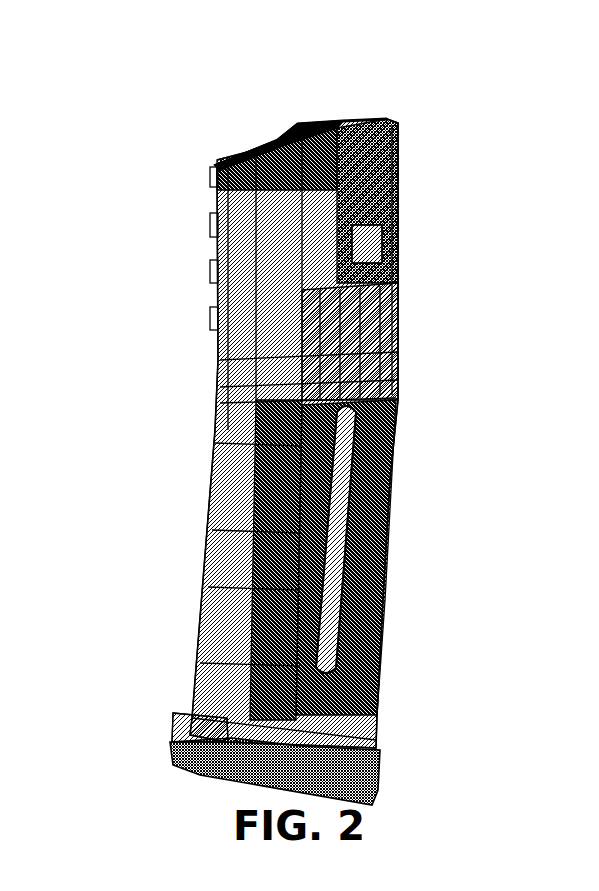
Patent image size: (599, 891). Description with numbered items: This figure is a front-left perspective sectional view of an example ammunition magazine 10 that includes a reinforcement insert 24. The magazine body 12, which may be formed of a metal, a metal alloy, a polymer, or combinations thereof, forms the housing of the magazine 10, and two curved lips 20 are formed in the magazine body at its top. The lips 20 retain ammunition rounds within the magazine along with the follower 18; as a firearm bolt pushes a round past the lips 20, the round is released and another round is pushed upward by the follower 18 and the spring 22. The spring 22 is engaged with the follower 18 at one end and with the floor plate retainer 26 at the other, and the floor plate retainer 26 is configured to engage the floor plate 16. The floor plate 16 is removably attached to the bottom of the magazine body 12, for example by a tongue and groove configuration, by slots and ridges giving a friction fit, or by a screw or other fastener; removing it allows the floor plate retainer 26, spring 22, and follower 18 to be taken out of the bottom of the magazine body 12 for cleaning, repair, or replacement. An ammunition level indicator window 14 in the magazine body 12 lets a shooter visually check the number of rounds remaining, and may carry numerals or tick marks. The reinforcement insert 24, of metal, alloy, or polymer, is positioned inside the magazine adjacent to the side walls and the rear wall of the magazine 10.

The ammunition magazine 10 is at (165, 185).
The magazine body 12 is at (220, 343).
The ammunition level indicator window 14 is at (373, 520).
The floor plate 16 is at (172, 747).
The follower 18 is at (278, 140).
The curved lips 20 is at (358, 123).
The spring 22 is at (340, 340).
The reinforcement insert 24 is at (398, 190).
The floor plate retainer 26 is at (197, 713).